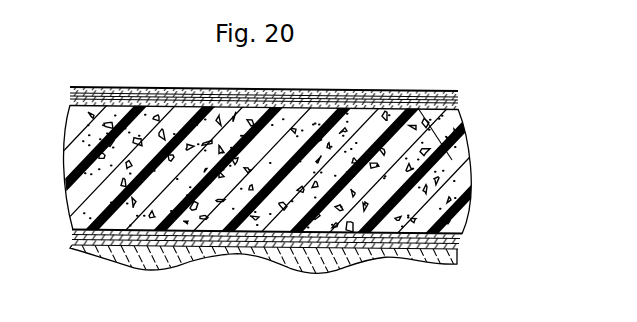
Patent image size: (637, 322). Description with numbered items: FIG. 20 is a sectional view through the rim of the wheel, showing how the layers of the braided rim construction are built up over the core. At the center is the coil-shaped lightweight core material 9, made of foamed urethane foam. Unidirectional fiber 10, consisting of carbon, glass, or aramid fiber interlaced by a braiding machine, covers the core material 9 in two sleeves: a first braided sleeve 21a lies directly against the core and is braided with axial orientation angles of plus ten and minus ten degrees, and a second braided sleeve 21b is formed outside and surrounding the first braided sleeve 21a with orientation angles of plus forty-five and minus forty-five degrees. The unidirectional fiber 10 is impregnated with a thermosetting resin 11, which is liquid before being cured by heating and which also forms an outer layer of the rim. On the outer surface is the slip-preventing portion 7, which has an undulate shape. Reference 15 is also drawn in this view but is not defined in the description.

The slip-preventing portion 7 is at (343, 262).
The coil-shaped lightweight core material 9 is at (473, 147).
The unidirectional fiber 10 is at (458, 109).
The thermosetting resin 11 is at (353, 88).
The intermediate layer 15 is at (432, 92).
The first braided sleeve 21a is at (452, 160).
The second braided sleeve 21b is at (458, 96).